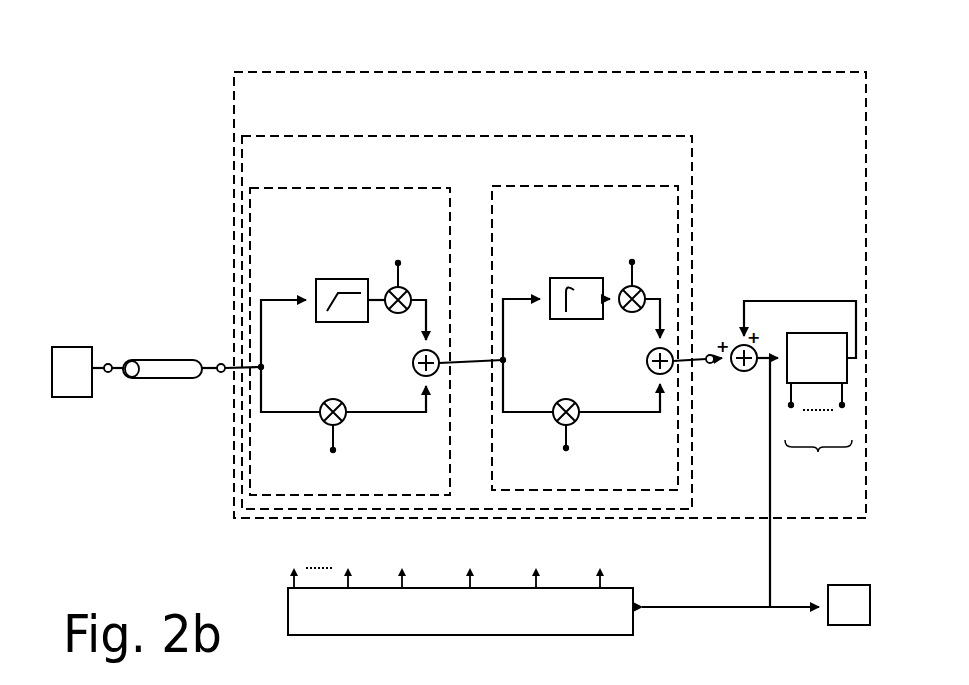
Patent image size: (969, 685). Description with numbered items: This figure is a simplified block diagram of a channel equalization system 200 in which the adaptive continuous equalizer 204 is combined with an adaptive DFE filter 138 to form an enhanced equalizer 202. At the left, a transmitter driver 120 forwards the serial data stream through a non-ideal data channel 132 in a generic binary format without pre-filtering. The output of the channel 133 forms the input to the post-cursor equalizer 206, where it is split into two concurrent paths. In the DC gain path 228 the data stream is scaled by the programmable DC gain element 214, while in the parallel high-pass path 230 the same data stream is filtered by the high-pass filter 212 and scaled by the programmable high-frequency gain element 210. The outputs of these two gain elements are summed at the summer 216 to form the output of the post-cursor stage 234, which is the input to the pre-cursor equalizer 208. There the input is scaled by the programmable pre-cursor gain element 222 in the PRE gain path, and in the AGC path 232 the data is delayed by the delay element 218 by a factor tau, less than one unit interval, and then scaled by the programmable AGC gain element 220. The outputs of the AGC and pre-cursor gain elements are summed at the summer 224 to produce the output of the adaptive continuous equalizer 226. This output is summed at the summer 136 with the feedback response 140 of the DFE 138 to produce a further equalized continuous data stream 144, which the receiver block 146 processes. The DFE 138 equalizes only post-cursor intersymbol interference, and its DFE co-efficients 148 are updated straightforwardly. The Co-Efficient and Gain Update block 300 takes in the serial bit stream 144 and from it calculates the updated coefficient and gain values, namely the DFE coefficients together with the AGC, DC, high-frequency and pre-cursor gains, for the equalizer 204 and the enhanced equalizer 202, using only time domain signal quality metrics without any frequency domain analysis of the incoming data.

The system 200 is at (192, 118).
The enhanced equalizer 202 is at (365, 72).
The adaptive continuous equalizer 204 is at (463, 136).
The post-cursor equalizer 206 is at (373, 188).
The pre-cursor equalizer 208 is at (594, 186).
The programmable gain element GHF 210 is at (372, 248).
The high-pass filter 212 is at (320, 322).
The programmable gain element GDC 214 is at (316, 462).
The summer 216 is at (413, 365).
The delay element 218 is at (554, 319).
The programmable gain element GAGC 220 is at (606, 250).
The programmable gain element GPRE 222 is at (550, 462).
The summer 224 is at (647, 363).
The output of the adaptive continuous equalizer 226 is at (706, 352).
The DC gain path 228 is at (261, 300).
The high-pass path 230 is at (262, 405).
The AGC path 232 is at (503, 298).
The output of the post-cursor stage 234 is at (462, 366).
The transmitter driver 120 is at (75, 397).
The non-ideal data channel 132 is at (178, 360).
The output of the channel 133 is at (219, 372).
The summer 136 is at (740, 372).
The adaptive DFE filter 138 is at (797, 333).
The feedback response 140 is at (755, 301).
The equalized continuous data stream 144 is at (770, 545).
The receiver block 146 is at (855, 625).
The DFE co-efficients 148 is at (820, 430).
The Co-Efficient and Gain Update block 300 is at (605, 635).